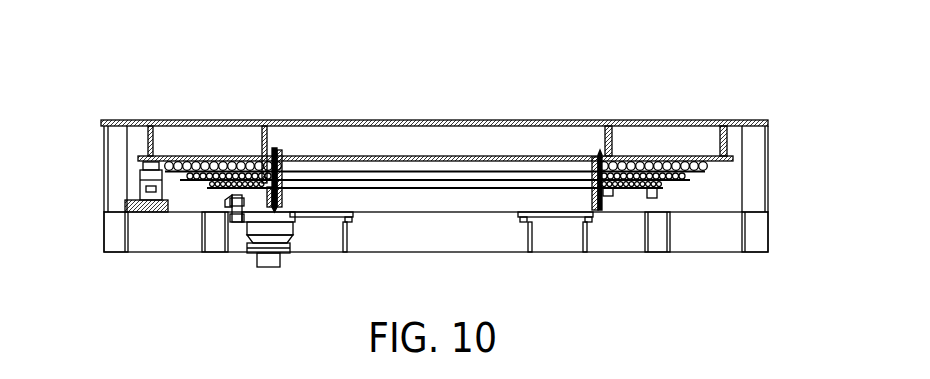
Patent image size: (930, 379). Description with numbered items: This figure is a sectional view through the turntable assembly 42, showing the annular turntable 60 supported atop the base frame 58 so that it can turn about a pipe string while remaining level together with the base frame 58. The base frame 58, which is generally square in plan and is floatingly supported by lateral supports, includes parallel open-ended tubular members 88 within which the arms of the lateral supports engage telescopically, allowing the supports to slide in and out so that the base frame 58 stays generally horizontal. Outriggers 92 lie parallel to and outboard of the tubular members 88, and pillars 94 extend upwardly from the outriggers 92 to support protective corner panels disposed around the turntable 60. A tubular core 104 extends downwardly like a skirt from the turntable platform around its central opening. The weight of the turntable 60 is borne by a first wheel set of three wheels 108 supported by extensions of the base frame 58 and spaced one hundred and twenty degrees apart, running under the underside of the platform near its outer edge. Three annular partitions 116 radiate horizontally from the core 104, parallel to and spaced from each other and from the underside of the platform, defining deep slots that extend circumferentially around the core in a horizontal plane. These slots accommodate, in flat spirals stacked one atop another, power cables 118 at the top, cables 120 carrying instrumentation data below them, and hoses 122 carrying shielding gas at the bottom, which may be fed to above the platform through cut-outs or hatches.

The turntable assembly 42 is at (111, 92).
The base frame 58 is at (164, 246).
The annular turntable 60 is at (496, 112).
The tubular members 88 is at (215, 252).
The outriggers 92 is at (114, 247).
The pillars 94 is at (755, 168).
The tubular core 104 is at (590, 210).
The wheels 108 is at (142, 192).
The annular partitions 116 is at (205, 165).
The power cables 118 is at (647, 165).
The cables carrying instrumentation data 120 is at (266, 160).
The hoses carrying shielding gas 122 is at (250, 197).